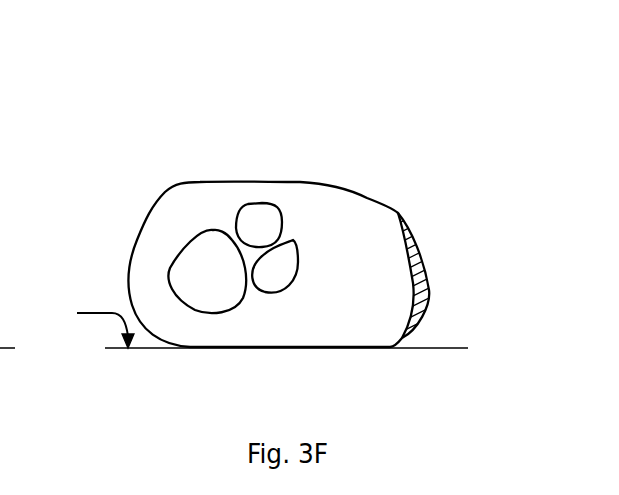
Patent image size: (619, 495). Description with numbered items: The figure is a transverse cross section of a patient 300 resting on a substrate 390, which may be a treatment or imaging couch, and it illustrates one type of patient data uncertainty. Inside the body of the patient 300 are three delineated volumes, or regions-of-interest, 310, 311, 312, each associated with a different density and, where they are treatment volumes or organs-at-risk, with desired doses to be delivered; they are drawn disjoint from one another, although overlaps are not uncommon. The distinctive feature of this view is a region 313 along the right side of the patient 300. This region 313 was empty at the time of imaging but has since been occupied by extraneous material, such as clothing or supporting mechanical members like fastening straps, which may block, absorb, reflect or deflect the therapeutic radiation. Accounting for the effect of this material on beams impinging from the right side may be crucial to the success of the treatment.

The patient 300 is at (151, 213).
The volume 310 is at (172, 268).
The volume 311 is at (257, 203).
The volume 312 is at (293, 240).
The region 313 is at (420, 263).
The substrate 390 is at (83, 312).